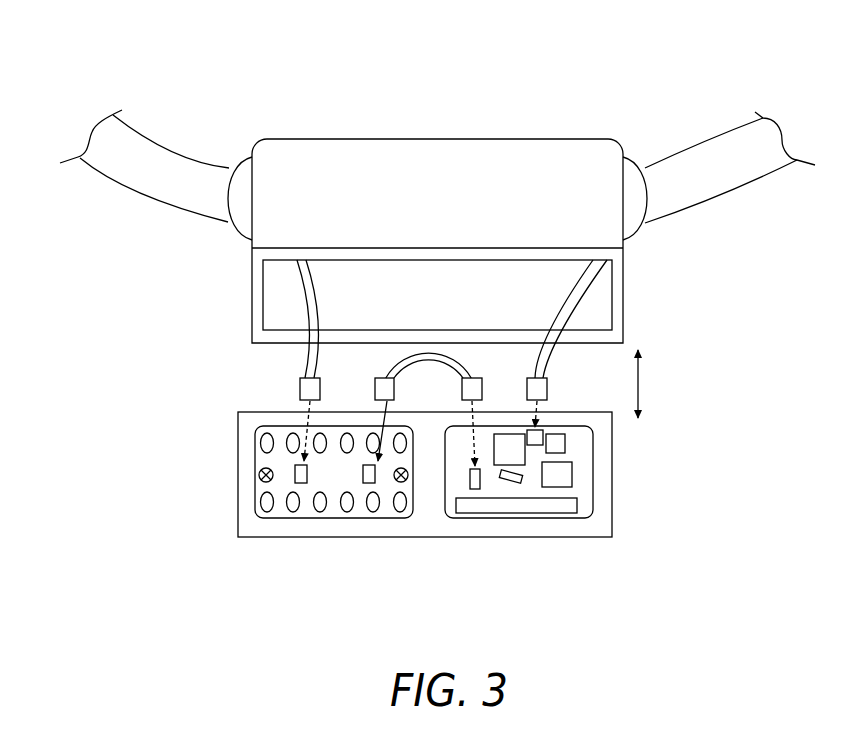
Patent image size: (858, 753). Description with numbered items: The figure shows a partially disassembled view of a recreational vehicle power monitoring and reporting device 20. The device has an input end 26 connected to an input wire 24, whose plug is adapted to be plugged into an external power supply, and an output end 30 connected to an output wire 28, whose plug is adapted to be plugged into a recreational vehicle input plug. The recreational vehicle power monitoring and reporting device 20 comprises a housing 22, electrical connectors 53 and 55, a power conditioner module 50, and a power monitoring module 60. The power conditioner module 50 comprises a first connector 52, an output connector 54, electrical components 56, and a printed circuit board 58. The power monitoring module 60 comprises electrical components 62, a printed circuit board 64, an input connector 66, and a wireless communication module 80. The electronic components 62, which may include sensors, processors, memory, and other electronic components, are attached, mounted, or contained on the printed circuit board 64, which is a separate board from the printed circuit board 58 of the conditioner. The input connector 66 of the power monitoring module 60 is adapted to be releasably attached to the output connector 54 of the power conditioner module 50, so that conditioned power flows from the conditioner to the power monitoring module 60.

The recreational vehicle power monitoring and reporting device 20 is at (494, 57).
The housing 22 is at (402, 152).
The input wire 24 is at (175, 173).
The input end 26 is at (216, 237).
The output wire 28 is at (683, 170).
The output end 30 is at (639, 243).
The power conditioner module 50 is at (247, 493).
The first connector 52 is at (293, 468).
The electrical connector 53 is at (300, 379).
The output connector 54 is at (365, 485).
The electrical connector 55 is at (377, 379).
The electrical components 56 is at (339, 521).
The printed circuit board 58 is at (383, 507).
The power monitoring module 60 is at (443, 492).
The electrical components 62 is at (529, 470).
The printed circuit board 64 is at (578, 455).
The input connector 66 is at (473, 490).
The wireless communication module 80 is at (502, 508).